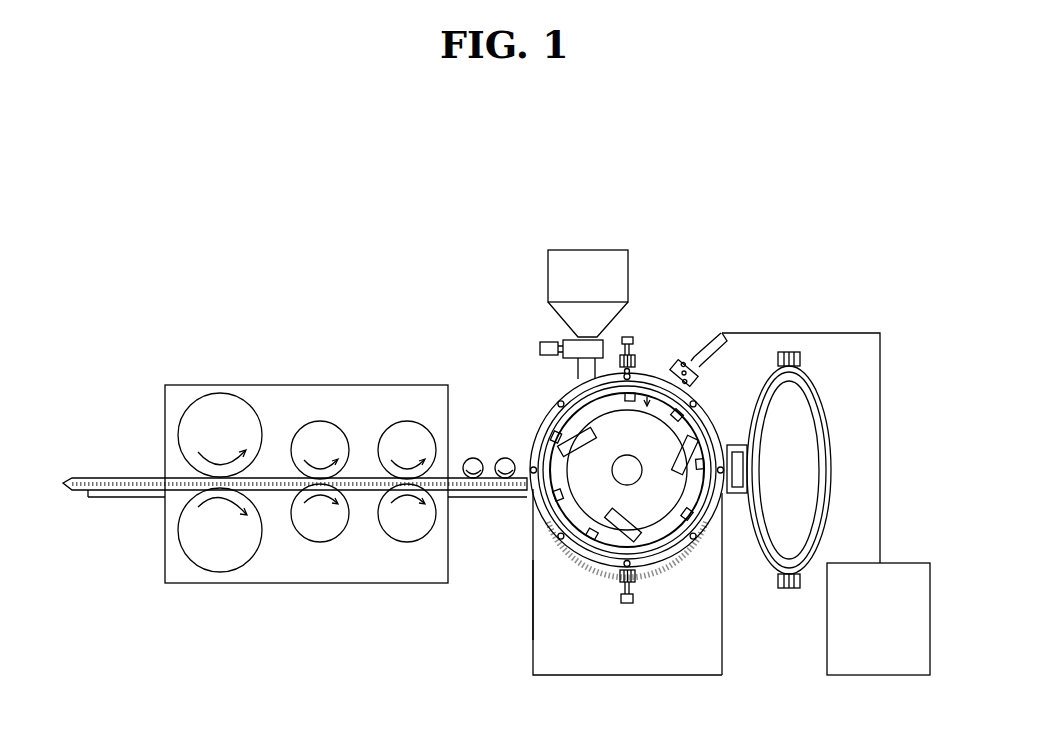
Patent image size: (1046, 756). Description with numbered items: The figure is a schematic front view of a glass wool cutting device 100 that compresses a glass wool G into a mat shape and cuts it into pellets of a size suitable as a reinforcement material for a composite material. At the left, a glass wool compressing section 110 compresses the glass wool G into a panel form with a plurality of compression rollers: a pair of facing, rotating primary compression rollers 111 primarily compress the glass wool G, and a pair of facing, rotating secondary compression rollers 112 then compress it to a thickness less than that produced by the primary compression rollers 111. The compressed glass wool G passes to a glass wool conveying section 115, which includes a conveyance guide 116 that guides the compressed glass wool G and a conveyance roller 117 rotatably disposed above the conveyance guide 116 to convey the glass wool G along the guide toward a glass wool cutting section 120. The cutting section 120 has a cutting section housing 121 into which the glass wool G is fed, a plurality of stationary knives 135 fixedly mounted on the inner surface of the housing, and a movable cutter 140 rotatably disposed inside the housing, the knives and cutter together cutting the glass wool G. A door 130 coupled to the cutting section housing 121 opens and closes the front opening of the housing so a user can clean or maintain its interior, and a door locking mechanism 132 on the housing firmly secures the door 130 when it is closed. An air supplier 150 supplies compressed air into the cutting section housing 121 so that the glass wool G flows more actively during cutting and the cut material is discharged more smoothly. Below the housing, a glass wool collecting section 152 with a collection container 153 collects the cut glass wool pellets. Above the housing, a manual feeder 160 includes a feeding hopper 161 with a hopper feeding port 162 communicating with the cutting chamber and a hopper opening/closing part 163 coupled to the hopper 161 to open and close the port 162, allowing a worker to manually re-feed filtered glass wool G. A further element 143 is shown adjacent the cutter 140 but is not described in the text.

The glass wool G is at (100, 477).
The glass wool cutting device 100 is at (278, 250).
The glass wool compressing section 110 is at (305, 367).
The primary compression roller 111 is at (232, 393).
The secondary compression roller 112 is at (333, 425).
The glass wool conveying section 115 is at (501, 455).
The conveyance guide 116 is at (480, 497).
The conveyance roller 117 is at (473, 456).
The glass wool cutting section 120 is at (690, 248).
The cutting section housing 121 is at (742, 502).
The door 130 is at (820, 390).
The door locking mechanism 132 is at (632, 330).
The stationary knife 135 is at (548, 425).
The movable cutter 140 is at (662, 367).
The supply pipe 143 is at (719, 440).
The air supplier 150 is at (906, 575).
The glass wool collecting section 152 is at (522, 650).
The collection container 153 is at (533, 598).
The manual feeder 160 is at (570, 228).
The feeding hopper 161 is at (548, 265).
The hopper feeding port 162 is at (580, 372).
The hopper opening/closing part 163 is at (540, 333).